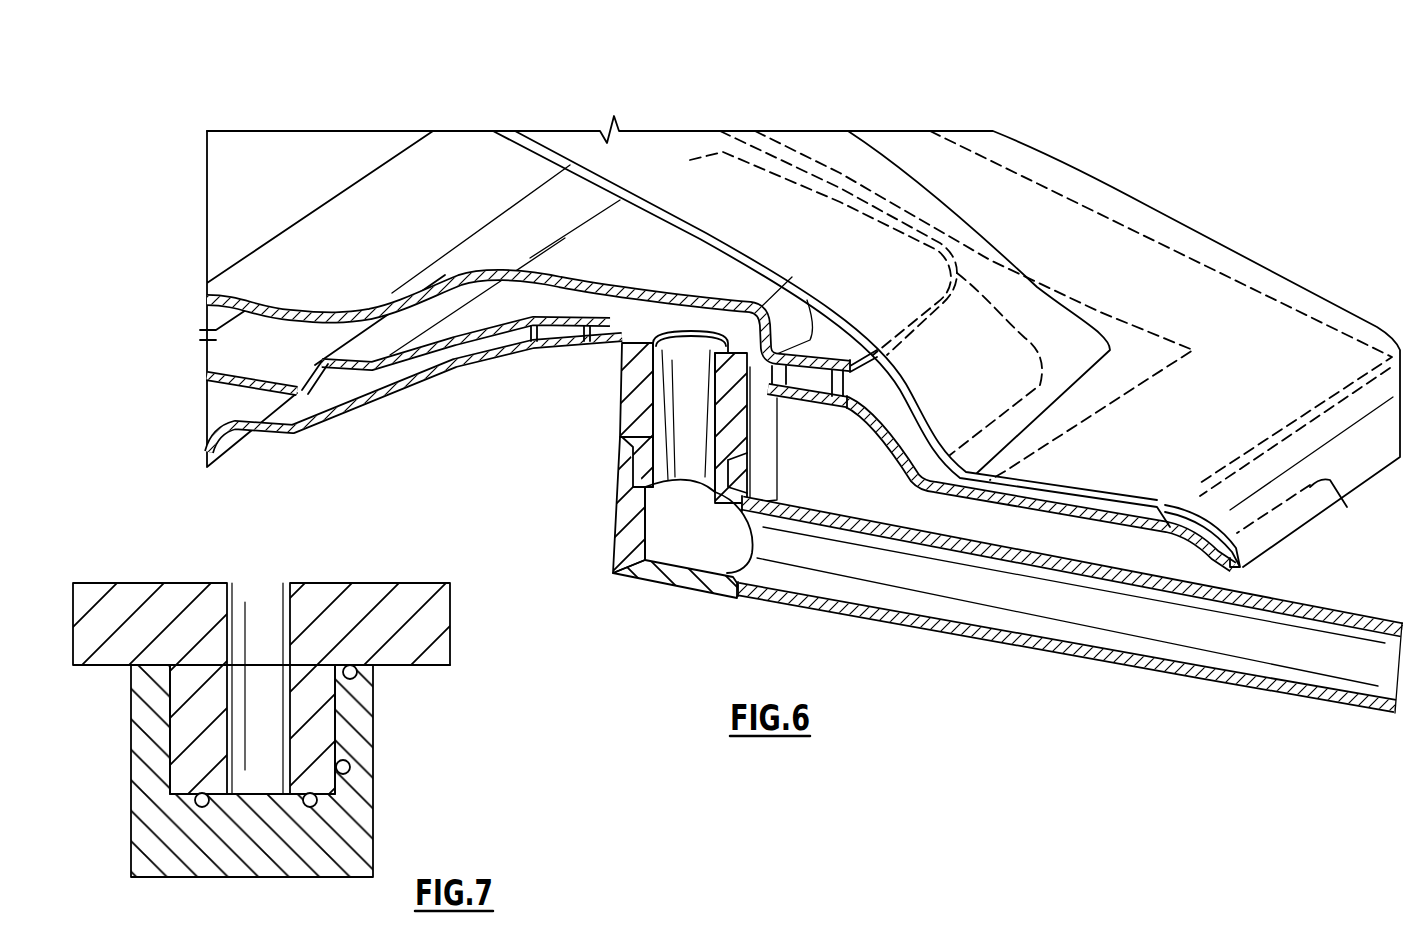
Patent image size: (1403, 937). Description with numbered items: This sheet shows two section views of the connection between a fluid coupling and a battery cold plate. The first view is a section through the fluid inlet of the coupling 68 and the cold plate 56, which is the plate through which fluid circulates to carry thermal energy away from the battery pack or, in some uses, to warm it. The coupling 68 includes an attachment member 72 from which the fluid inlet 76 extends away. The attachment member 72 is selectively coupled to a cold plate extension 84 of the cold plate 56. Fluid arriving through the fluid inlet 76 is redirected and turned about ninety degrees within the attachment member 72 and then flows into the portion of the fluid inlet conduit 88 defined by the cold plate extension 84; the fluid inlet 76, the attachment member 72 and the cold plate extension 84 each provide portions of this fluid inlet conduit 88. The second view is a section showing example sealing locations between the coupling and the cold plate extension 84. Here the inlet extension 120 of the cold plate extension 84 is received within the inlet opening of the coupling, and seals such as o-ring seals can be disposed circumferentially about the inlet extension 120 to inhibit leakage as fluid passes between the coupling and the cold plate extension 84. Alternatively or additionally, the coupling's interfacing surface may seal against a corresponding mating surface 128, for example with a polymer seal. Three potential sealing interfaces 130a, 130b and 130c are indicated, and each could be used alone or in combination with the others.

In FIG. 6, the cold plate 56 is at (950, 98).
In FIG. 6, the coupling 68 is at (694, 518).
In FIG. 6, the attachment member 72 is at (760, 477).
In FIG. 7, the attachment member 72 is at (268, 877).
In FIG. 6, the fluid inlet 76 is at (896, 614).
In FIG. 6, the cold plate extension 84 is at (622, 383).
In FIG. 7, the cold plate extension 84 is at (452, 637).
In FIG. 6, the fluid inlet conduit 88 is at (670, 455).
In FIG. 7, the fluid inlet conduit 88 is at (248, 800).
In FIG. 7, the inlet extension 120 is at (315, 743).
In FIG. 7, the mating surface 128 is at (422, 670).
In FIG. 7, the sealing interface 130a is at (323, 828).
In FIG. 7, the sealing interface 130b is at (350, 769).
In FIG. 7, the sealing interface 130c is at (356, 676).